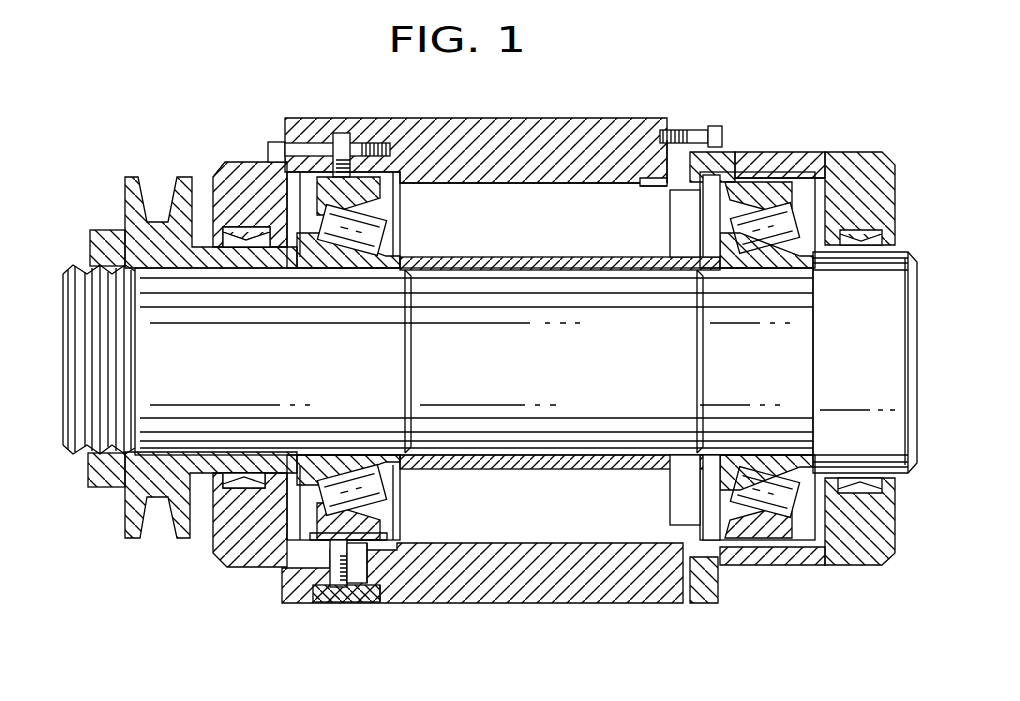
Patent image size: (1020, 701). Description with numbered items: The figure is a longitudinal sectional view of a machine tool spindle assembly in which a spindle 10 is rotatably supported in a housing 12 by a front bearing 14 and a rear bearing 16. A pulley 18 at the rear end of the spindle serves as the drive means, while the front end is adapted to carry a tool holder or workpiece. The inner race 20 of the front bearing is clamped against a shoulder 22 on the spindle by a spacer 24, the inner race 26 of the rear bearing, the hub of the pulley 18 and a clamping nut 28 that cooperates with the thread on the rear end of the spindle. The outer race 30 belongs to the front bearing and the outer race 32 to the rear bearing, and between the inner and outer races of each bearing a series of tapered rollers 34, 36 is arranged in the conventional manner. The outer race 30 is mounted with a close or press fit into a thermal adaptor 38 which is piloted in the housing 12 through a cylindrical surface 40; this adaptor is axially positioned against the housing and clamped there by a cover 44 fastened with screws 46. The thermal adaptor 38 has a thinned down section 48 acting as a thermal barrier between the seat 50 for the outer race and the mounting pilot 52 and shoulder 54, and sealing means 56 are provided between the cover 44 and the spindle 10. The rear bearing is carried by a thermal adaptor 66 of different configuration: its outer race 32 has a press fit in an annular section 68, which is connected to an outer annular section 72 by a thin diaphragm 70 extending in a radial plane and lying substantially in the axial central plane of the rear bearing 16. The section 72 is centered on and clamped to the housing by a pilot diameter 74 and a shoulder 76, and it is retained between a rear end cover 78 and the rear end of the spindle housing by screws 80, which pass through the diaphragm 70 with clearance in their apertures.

The spindle 10 is at (903, 240).
The housing 12 is at (463, 113).
The front bearing 14 is at (831, 180).
The rear bearing 16 is at (419, 239).
The pulley 18 is at (128, 540).
The inner race 20 is at (768, 455).
The shoulder 22 is at (812, 350).
The spacer 24 is at (528, 470).
The inner race 26 is at (332, 256).
The clamping nut 28 is at (100, 480).
The outer race 30 is at (733, 515).
The outer race 32 is at (387, 222).
The tapered rollers 34 is at (728, 492).
The tapered rollers 36 is at (363, 483).
The thermal adaptor 38 is at (769, 187).
The cylindrical surface 40 is at (645, 181).
The cover 44 is at (853, 553).
The screws 46 is at (715, 128).
The thinned down section 48 is at (707, 196).
The seat 50 is at (738, 180).
The mounting pilot 52 is at (670, 200).
The shoulder 54 is at (668, 182).
The sealing means 56 is at (856, 246).
The thermal adaptor 66 is at (408, 528).
The annular section 68 is at (391, 526).
The diaphragm 70 is at (332, 573).
The outer annular section 72 is at (320, 603).
The pilot diameter 74 is at (370, 593).
The shoulder 76 is at (382, 600).
The rear end cover 78 is at (258, 553).
The screws 80 is at (300, 150).